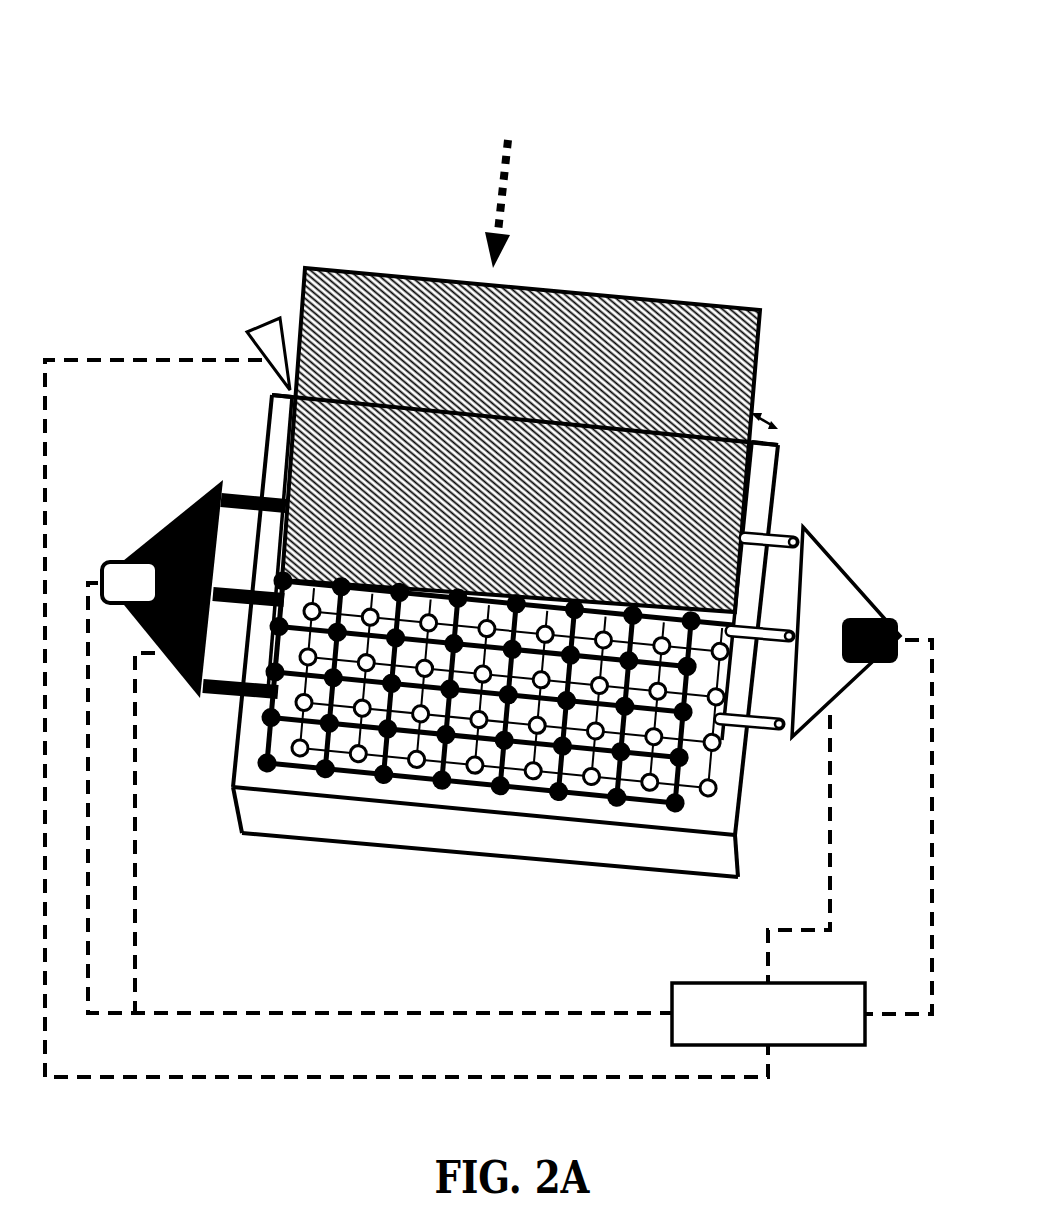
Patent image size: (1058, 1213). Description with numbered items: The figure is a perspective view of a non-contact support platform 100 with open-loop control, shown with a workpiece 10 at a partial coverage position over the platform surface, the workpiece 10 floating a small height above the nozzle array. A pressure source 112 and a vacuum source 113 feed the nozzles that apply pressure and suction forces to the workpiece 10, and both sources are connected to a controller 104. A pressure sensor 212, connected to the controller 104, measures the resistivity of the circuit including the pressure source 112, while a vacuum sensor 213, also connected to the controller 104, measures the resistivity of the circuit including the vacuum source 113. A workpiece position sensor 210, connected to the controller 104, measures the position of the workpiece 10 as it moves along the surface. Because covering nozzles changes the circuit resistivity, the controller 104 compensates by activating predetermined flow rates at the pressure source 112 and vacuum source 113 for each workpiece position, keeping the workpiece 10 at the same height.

The non-contact support platform 100 is at (158, 115).
The workpiece 10 is at (632, 297).
The workpiece position sensor 210 is at (264, 320).
The pressure sensor 212 is at (888, 617).
The vacuum sensor 213 is at (125, 562).
The pressure source 112 is at (880, 615).
The vacuum source 113 is at (190, 505).
The controller 104 is at (808, 1047).